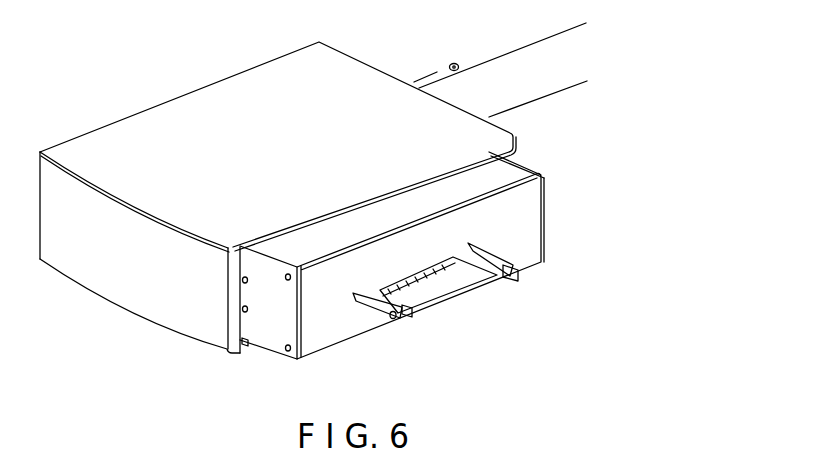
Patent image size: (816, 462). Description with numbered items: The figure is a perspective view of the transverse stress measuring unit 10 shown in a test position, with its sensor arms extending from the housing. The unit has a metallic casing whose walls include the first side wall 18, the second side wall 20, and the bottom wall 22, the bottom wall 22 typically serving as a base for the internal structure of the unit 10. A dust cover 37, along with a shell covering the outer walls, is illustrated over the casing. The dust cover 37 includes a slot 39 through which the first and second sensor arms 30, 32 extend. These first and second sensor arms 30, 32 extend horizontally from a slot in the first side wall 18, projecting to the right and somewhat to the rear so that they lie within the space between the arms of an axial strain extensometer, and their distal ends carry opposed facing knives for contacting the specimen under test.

The transverse stress measuring unit 10 is at (161, 77).
The second side wall 20 is at (56, 134).
The bottom wall 22 is at (148, 331).
The first side wall 18 is at (253, 342).
The dust cover 37 is at (312, 297).
The slot 39 is at (430, 262).
The first sensor arm 30 is at (498, 248).
The second sensor arm 32 is at (375, 312).